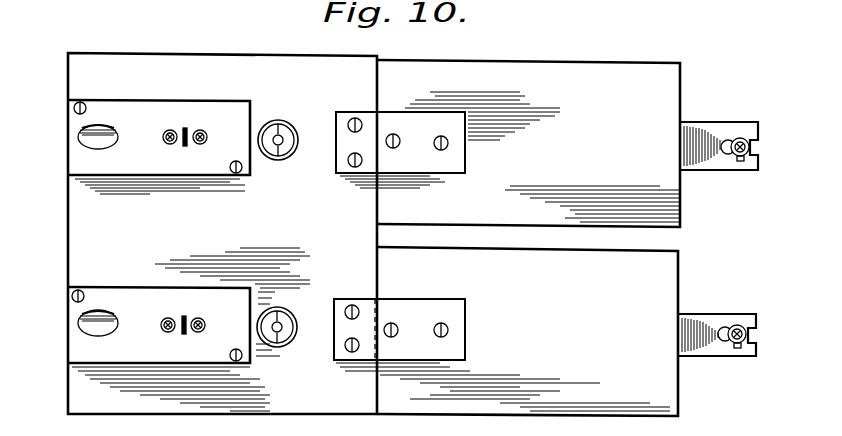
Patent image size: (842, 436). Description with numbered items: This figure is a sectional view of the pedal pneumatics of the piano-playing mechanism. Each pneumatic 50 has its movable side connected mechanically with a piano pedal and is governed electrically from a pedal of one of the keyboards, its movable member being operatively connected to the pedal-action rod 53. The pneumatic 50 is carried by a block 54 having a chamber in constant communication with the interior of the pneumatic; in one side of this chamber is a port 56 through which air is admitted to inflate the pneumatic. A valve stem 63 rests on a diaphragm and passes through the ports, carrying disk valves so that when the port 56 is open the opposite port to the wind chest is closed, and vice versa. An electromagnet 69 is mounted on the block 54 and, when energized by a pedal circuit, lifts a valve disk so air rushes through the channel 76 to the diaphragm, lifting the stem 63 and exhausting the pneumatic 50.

The pneumatic 50 is at (507, 238).
The pedal-action rod 53 is at (735, 156).
The block 54 is at (222, 233).
The port 56 is at (286, 128).
The valve stem 63 is at (281, 145).
The electromagnet 69 is at (167, 144).
The channel 76 is at (98, 127).